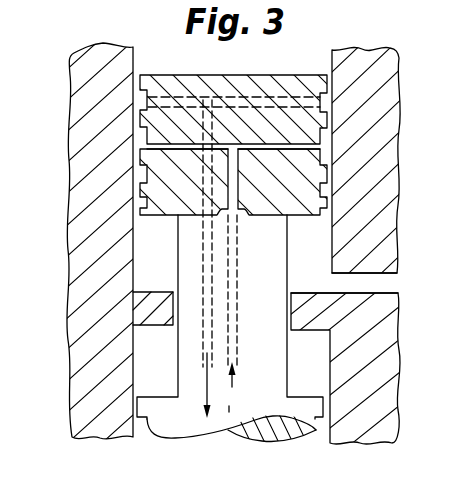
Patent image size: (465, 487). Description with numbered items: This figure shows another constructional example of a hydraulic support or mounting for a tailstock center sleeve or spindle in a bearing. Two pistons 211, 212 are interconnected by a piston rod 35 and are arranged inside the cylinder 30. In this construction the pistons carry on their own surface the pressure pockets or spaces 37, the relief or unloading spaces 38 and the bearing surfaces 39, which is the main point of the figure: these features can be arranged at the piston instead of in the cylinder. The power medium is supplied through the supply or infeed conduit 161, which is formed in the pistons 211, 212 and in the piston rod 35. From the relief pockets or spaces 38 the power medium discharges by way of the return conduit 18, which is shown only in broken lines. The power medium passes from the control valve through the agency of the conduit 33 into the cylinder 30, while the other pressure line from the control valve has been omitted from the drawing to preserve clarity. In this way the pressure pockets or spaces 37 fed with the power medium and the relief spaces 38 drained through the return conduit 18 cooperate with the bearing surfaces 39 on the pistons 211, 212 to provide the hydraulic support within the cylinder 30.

The cylinder 30 is at (250, 137).
The piston 211 is at (221, 84).
The relief space 38 is at (332, 102).
The bearing surface 39 is at (332, 120).
The pressure pocket 37 is at (323, 146).
The conduit 33 is at (446, 284).
The piston rod 35 is at (187, 336).
The return conduit 18 is at (203, 353).
The supply conduit 161 is at (233, 341).
The piston 212 is at (166, 416).